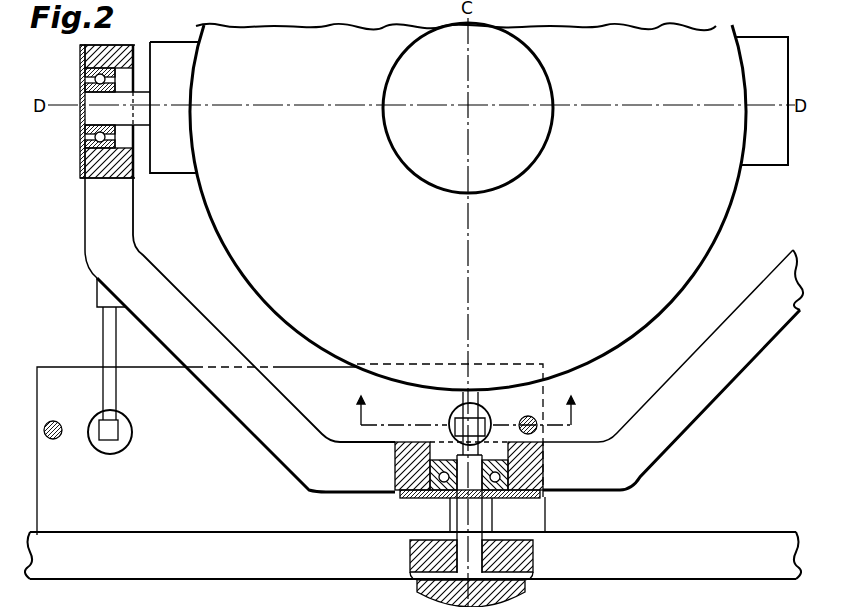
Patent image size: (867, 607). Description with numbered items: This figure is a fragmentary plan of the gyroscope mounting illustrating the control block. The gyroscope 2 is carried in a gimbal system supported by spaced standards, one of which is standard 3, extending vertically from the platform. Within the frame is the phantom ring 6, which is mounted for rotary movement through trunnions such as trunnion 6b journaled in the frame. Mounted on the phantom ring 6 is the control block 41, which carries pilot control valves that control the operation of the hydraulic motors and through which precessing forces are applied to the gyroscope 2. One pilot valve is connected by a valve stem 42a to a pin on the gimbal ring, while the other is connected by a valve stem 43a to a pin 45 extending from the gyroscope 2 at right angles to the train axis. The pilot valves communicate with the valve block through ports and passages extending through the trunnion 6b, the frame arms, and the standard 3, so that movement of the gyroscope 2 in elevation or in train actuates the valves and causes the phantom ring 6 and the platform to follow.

The gyroscope 2 is at (469, 206).
The standard 3 is at (462, 399).
The phantom ring 6 is at (107, 574).
The trunnion 6b is at (520, 586).
The control block 41 is at (540, 512).
The valve stem 42a is at (118, 432).
The valve stem 43a is at (517, 412).
The pin 45 is at (463, 394).